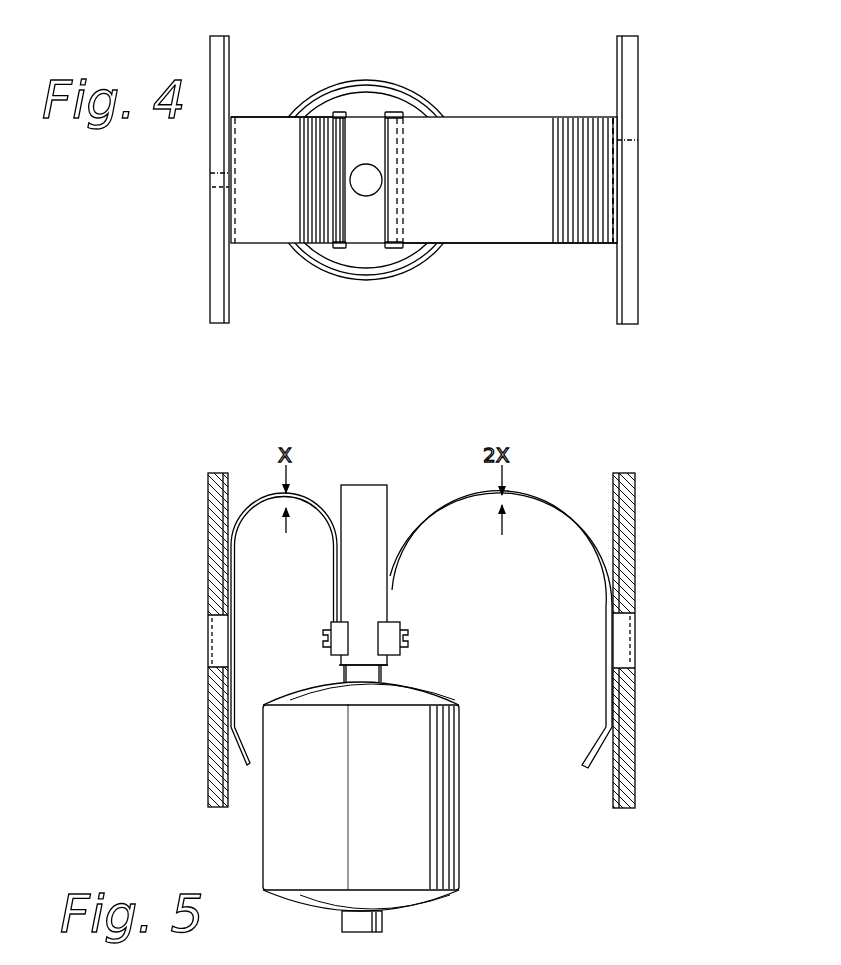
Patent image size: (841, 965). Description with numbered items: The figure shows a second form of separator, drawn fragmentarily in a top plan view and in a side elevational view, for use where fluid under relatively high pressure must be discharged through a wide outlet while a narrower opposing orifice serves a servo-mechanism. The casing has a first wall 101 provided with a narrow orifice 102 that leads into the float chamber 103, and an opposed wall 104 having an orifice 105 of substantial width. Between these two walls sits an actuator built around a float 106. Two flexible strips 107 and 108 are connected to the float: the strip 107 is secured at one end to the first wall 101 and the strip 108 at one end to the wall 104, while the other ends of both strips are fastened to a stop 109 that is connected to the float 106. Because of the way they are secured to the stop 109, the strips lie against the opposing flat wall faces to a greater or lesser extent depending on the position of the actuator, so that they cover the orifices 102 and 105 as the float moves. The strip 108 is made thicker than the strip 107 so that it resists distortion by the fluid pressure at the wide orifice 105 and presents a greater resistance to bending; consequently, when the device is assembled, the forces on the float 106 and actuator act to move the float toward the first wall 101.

In FIG. 4, the first wall 101 is at (216, 302).
In FIG. 4, the narrow orifice 102 is at (216, 190).
In FIG. 5, the narrow orifice 102 is at (210, 615).
In FIG. 4, the float chamber 103 is at (300, 272).
In FIG. 4, the wall 104 is at (638, 291).
In FIG. 5, the wall 104 is at (630, 770).
In FIG. 4, the orifice 105 is at (630, 220).
In FIG. 5, the orifice 105 is at (636, 617).
In FIG. 5, the float 106 is at (447, 805).
In FIG. 4, the strip 107 is at (258, 118).
In FIG. 5, the strip 107 is at (260, 510).
In FIG. 4, the strip 108 is at (523, 236).
In FIG. 5, the strip 108 is at (571, 527).
In FIG. 4, the stop 109 is at (373, 120).
In FIG. 5, the stop 109 is at (382, 508).